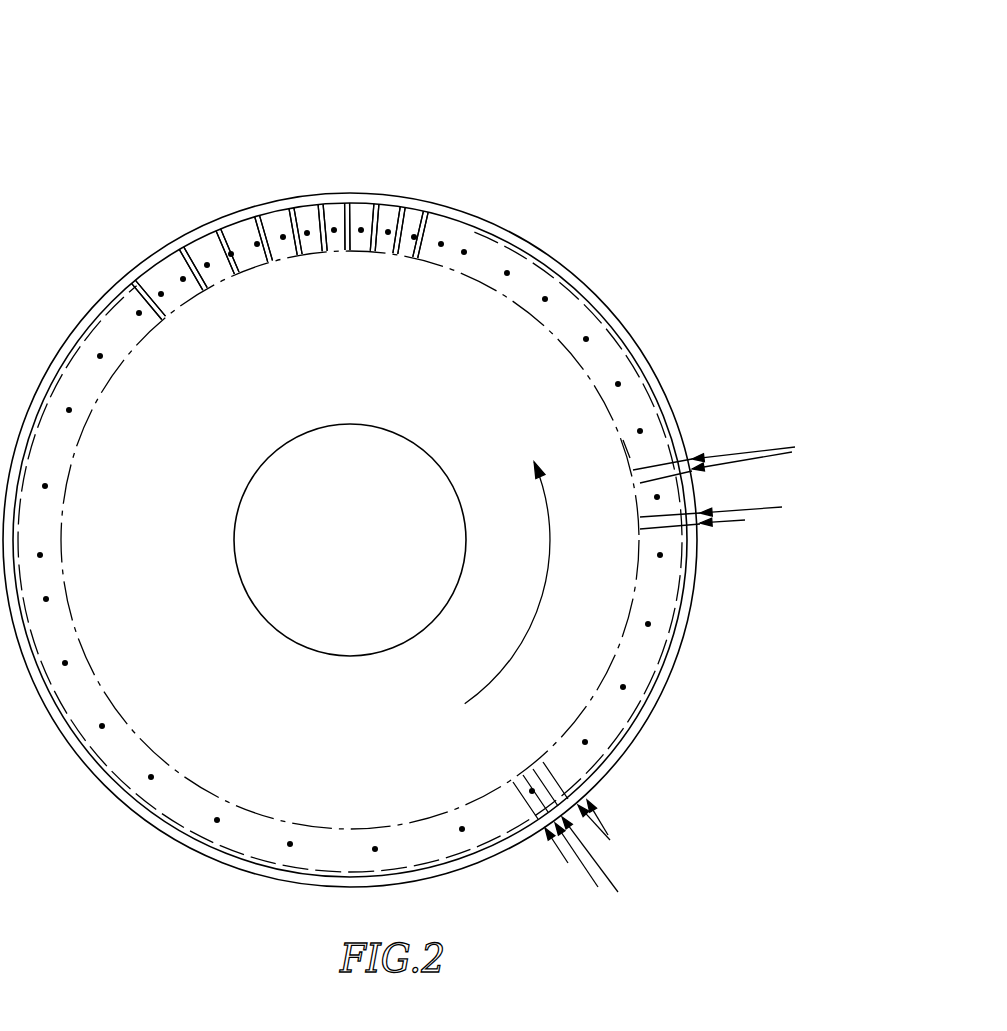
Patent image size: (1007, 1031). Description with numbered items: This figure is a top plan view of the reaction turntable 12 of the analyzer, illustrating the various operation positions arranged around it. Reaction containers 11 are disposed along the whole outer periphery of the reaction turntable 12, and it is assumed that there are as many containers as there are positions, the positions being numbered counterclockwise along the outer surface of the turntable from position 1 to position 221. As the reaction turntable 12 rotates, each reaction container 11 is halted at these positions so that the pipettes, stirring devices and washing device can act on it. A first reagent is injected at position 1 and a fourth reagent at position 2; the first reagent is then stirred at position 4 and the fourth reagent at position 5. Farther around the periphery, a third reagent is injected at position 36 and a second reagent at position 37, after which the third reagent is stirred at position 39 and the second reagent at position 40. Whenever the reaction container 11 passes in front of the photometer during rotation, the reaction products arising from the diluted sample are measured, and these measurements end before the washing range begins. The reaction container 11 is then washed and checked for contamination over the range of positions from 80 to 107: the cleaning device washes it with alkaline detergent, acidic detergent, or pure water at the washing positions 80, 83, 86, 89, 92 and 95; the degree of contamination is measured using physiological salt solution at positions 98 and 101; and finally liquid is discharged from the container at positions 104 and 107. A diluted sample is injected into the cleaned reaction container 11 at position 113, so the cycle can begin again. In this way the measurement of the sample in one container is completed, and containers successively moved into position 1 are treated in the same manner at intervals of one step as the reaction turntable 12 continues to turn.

The reaction turntable 12 is at (246, 872).
The reaction container 11 is at (346, 258).
The diluted sample injection position 113 is at (66, 210).
The liquid discharge position WD8 107 is at (176, 240).
The liquid discharge position WD7 104 is at (120, 94).
The contamination check position CB2 101 is at (231, 214).
The contamination check position CB1 98 is at (218, 58).
The washing position WD6 95 is at (290, 198).
The washing position WD5 92 is at (308, 76).
The washing position WD4 89 is at (350, 193).
The washing position WD3 86 is at (380, 194).
The washing position WD2 83 is at (410, 198).
The washing position WD1 80 is at (440, 205).
The second reagent stirring position 40 is at (776, 442).
The third reagent stirring position 39 is at (790, 451).
The second reagent injection position 37 is at (796, 518).
The third reagent injection position 36 is at (738, 521).
The fourth reagent stirring position 5 is at (644, 838).
The first reagent stirring position 4 is at (624, 870).
The fourth reagent injection position 2 is at (646, 920).
The first reagent injection position 1 is at (578, 906).
The last container position 221 is at (567, 866).